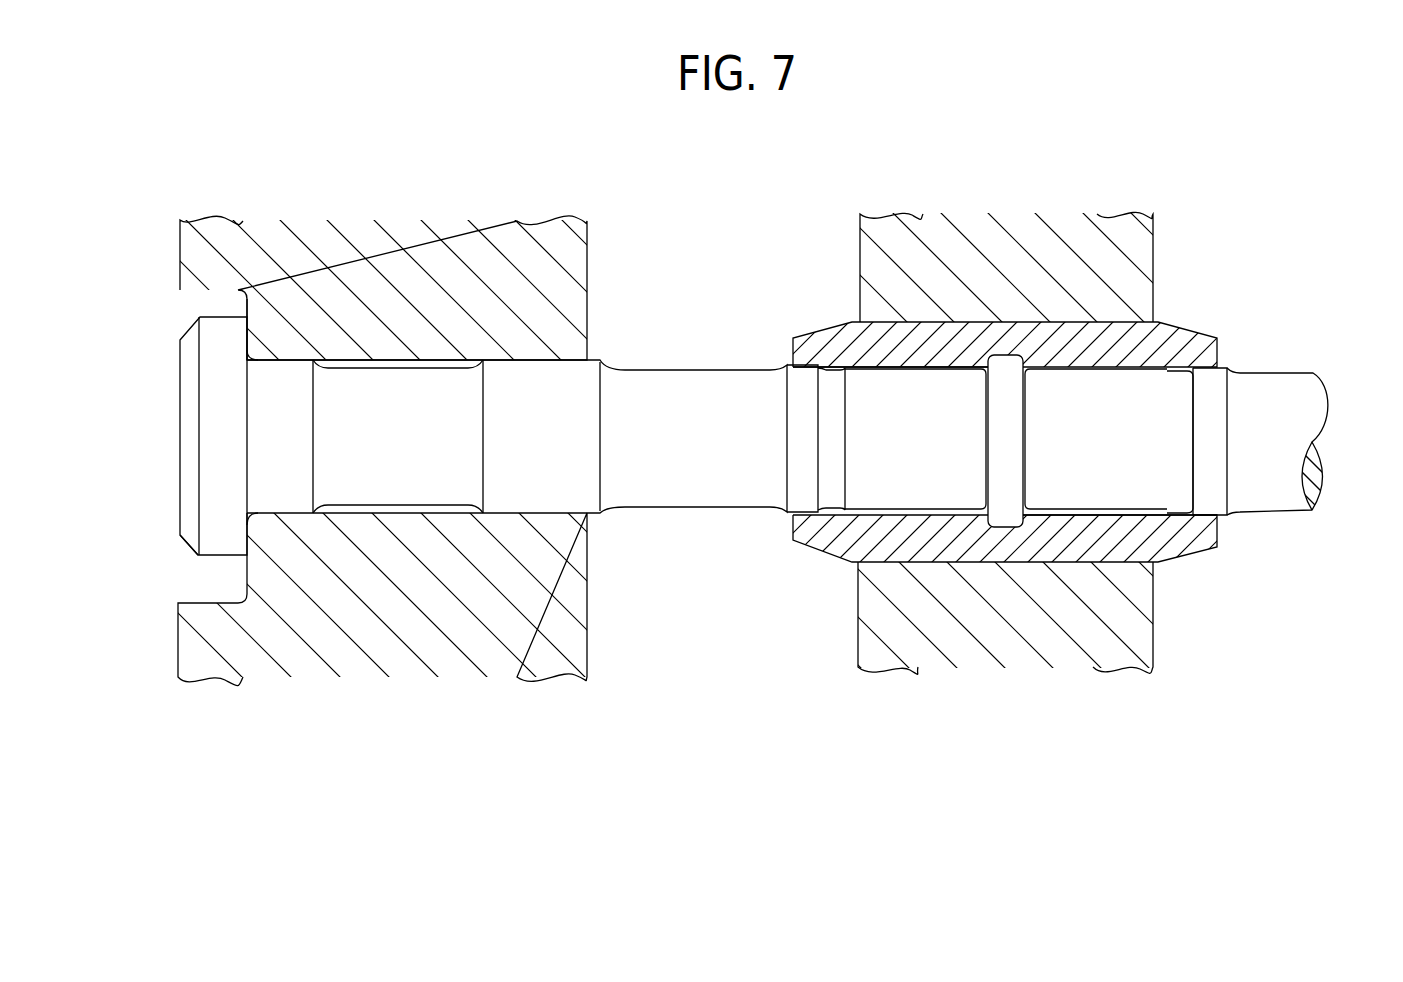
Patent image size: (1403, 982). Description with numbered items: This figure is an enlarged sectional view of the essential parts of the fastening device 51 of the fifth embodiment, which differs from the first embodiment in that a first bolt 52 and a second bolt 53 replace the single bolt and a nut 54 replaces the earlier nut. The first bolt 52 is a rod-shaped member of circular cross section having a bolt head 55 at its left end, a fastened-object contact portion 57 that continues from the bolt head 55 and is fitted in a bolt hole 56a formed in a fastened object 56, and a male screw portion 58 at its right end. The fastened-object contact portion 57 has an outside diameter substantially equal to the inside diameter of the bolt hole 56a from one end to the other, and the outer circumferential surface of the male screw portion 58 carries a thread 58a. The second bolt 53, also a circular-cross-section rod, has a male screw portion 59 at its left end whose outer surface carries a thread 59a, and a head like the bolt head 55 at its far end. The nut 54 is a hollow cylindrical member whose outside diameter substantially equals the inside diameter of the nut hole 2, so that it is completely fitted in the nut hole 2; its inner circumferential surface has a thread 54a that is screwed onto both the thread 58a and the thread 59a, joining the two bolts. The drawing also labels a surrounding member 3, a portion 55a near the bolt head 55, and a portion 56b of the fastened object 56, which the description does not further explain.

The nut hole 2 is at (1113, 325).
The housing 3 is at (1138, 249).
The fastening device 51 is at (698, 284).
The first bolt 52 is at (180, 416).
The second bolt 53 is at (1307, 412).
The nut 54 is at (826, 538).
The thread 54a is at (923, 512).
The bolt head 55 is at (213, 472).
The head corner 55a is at (248, 537).
The fastened object 56 is at (195, 246).
The bolt hole 56a is at (411, 362).
The housing abutment face 56b is at (245, 329).
The fastened-object contact portion 57 is at (284, 385).
The male screw portion 58 is at (867, 390).
The thread 58a is at (930, 366).
The male screw portion 59 is at (1149, 493).
The thread 59a is at (1113, 513).